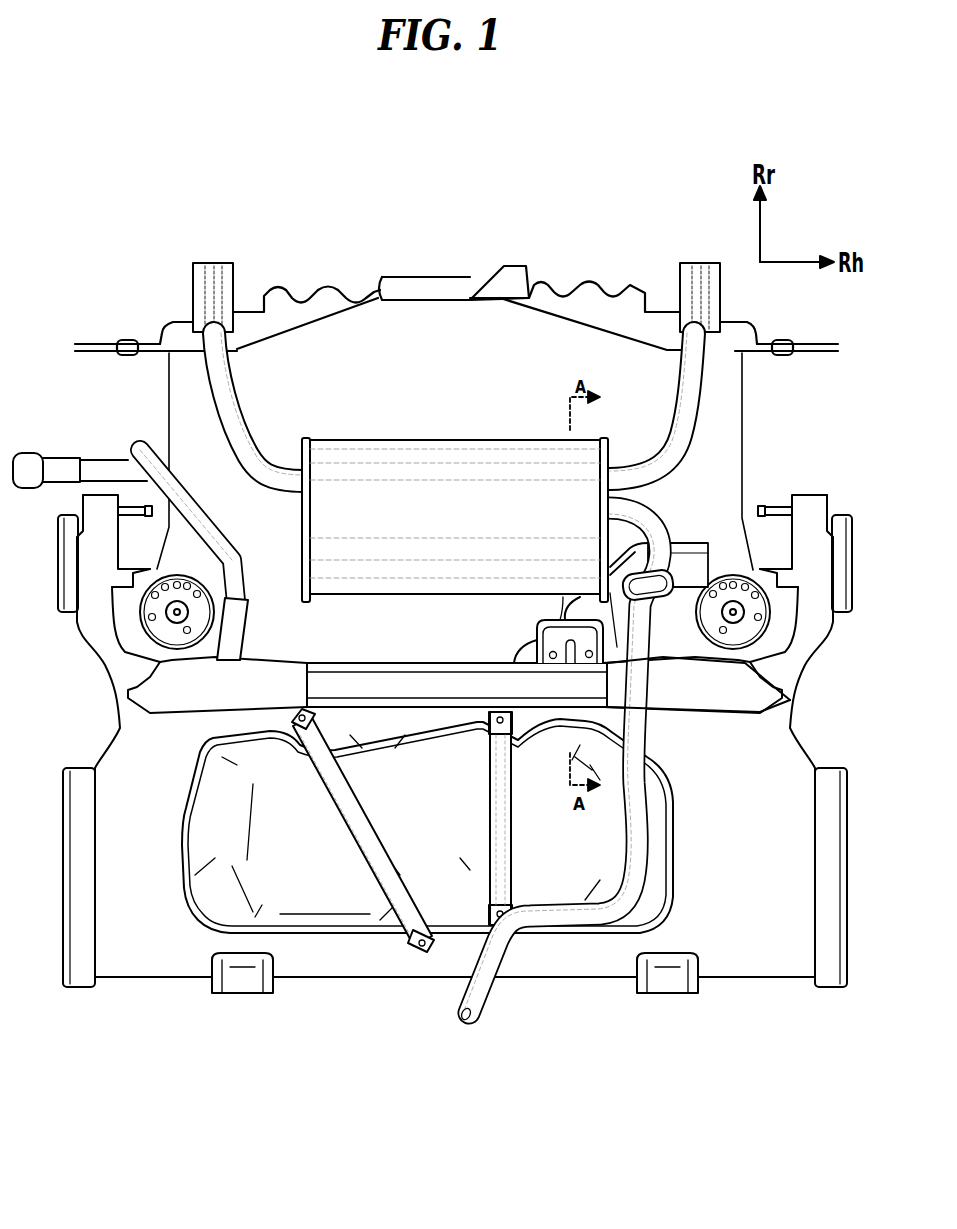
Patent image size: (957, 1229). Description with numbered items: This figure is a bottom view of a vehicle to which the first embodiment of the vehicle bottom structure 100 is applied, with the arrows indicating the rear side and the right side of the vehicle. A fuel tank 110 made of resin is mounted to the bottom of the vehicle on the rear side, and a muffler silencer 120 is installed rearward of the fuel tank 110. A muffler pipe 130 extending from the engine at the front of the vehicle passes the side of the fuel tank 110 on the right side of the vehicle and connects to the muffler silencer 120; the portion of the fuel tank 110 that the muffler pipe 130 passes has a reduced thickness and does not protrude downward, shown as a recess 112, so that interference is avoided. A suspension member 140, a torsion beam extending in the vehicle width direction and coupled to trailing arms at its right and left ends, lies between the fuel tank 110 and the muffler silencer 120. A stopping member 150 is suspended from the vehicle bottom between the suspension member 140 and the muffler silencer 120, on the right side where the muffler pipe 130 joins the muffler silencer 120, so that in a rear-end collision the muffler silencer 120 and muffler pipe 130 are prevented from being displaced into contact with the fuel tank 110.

The vehicle bottom structure 100 is at (150, 224).
The fuel tank 110 is at (180, 821).
The recess 112 is at (655, 902).
The muffler silencer 120 is at (363, 457).
The muffler pipe 130 is at (633, 730).
The suspension member 140 is at (324, 680).
The stopping member 150 is at (537, 628).